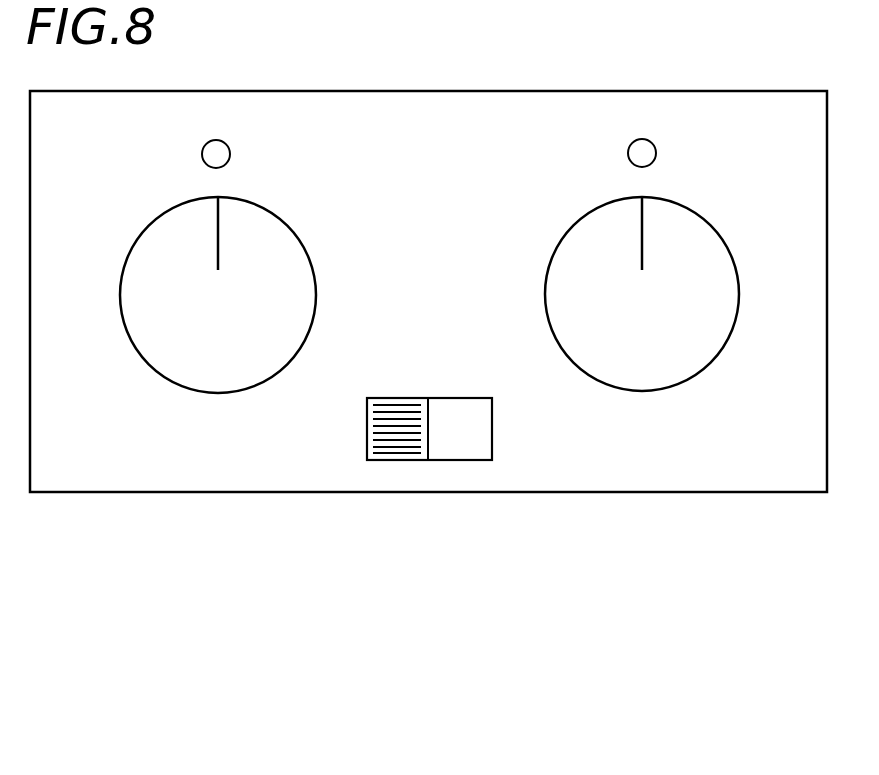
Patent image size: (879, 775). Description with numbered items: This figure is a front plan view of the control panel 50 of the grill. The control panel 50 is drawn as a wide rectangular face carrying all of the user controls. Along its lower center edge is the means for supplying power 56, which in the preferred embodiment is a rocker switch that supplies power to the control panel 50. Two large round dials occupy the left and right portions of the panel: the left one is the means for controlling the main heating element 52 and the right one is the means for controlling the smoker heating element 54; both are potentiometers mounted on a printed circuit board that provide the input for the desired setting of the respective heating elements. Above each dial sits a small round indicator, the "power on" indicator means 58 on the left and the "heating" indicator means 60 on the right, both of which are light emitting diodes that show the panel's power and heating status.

The control panel 50 is at (480, 102).
The means for controlling the main heating element 52 is at (150, 352).
The means for controlling the smoker heating element 54 is at (708, 352).
The means for supplying power 56 is at (425, 473).
The "power on" indicator means 58 is at (230, 154).
The "heating" indicator means 60 is at (628, 153).